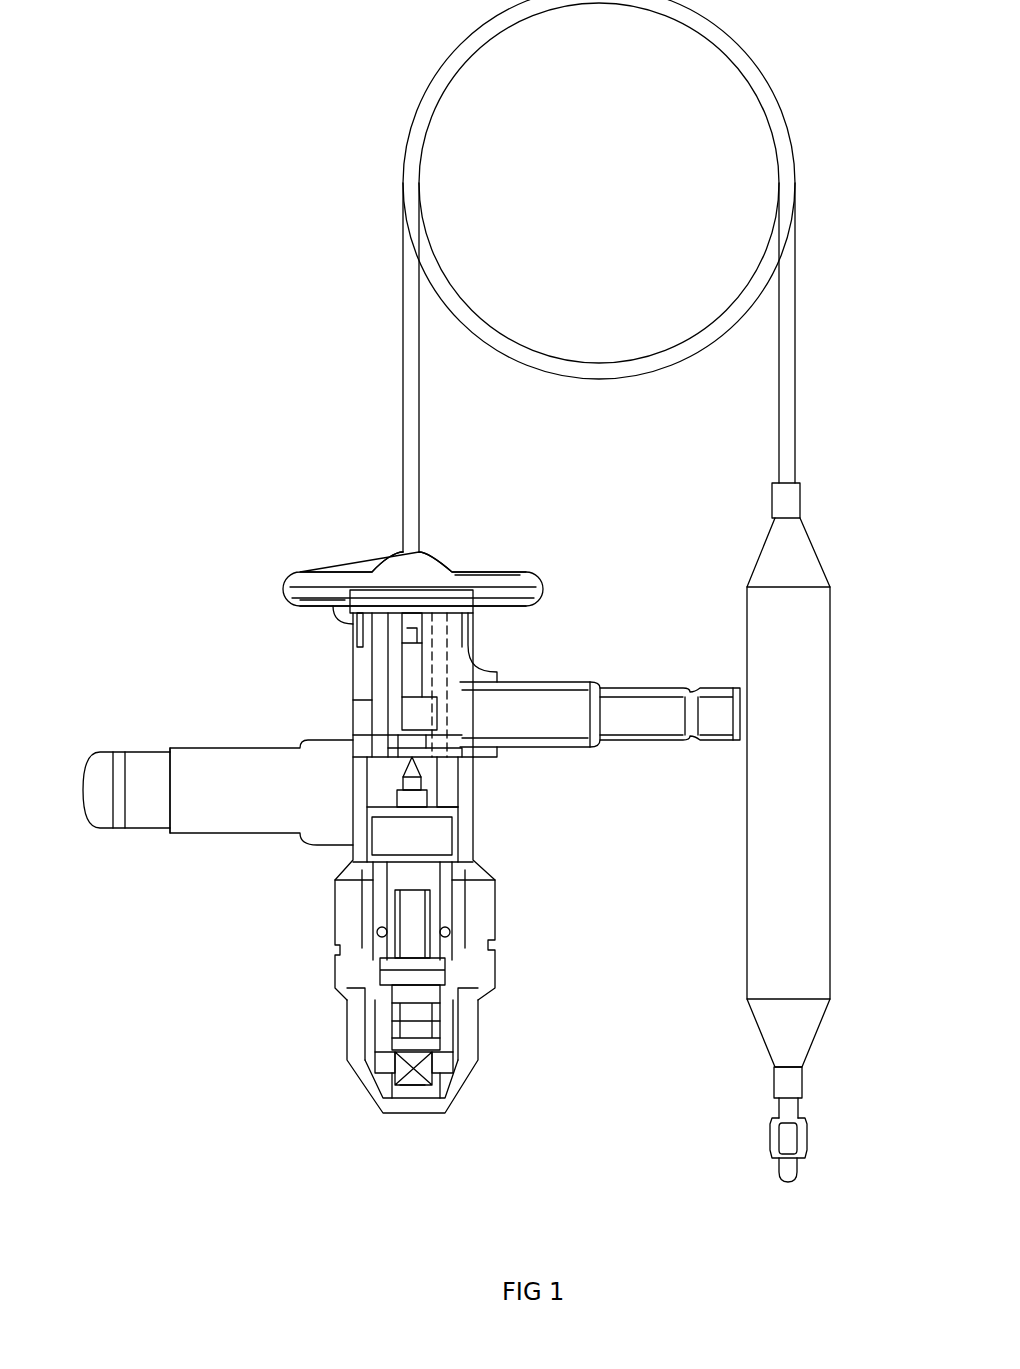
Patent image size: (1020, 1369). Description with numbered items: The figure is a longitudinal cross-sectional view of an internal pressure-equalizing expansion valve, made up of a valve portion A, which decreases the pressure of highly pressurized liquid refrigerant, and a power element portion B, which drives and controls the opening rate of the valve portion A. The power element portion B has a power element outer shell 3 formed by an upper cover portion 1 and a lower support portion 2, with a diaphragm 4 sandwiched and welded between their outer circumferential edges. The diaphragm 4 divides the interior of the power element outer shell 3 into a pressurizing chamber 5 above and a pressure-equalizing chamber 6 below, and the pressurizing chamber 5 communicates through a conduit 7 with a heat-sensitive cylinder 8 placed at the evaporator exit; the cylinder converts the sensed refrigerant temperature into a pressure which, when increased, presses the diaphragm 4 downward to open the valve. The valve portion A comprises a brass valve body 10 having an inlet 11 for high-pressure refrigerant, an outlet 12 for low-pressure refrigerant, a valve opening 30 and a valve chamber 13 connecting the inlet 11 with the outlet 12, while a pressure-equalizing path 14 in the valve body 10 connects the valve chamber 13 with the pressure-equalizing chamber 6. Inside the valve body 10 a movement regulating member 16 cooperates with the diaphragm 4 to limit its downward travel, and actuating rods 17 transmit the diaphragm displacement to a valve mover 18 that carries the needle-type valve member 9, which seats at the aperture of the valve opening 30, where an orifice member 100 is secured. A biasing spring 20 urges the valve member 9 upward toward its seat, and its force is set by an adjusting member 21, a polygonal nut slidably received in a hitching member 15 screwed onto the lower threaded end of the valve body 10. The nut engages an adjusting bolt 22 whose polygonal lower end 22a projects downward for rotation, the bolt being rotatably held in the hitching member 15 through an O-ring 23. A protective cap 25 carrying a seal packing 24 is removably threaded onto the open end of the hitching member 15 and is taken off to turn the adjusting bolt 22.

The upper cover portion 1 is at (502, 583).
The lower support portion 2 is at (512, 607).
The power element outer shell 3 is at (284, 584).
The diaphragm 4 is at (484, 588).
The pressurizing chamber 5 is at (345, 588).
The pressure-equalizing chamber 6 is at (336, 612).
The conduit 7 is at (404, 345).
The heat-sensitive cylinder 8 is at (748, 883).
The valve member 9 is at (416, 772).
The valve body 10 is at (335, 883).
The inlet 11 is at (560, 700).
The outlet 12 is at (225, 760).
The valve chamber 13 is at (362, 796).
The pressure-equalizing path 14 is at (376, 690).
The hitching member 15 is at (494, 988).
The movement regulating member 16 is at (390, 600).
The actuating rods 17 is at (442, 794).
The valve mover 18 is at (445, 846).
The biasing spring 20 is at (375, 905).
The adjusting member 21 is at (377, 956).
The adjusting bolt 22 is at (423, 913).
The polygonal lower end 22a is at (425, 1080).
The O-ring 23 is at (437, 1032).
The seal packing 24 is at (447, 1084).
The protective cap 25 is at (350, 1055).
The valve opening 30 is at (385, 736).
The orifice member 100 is at (355, 736).
The valve portion A is at (530, 868).
The power element portion B is at (554, 553).